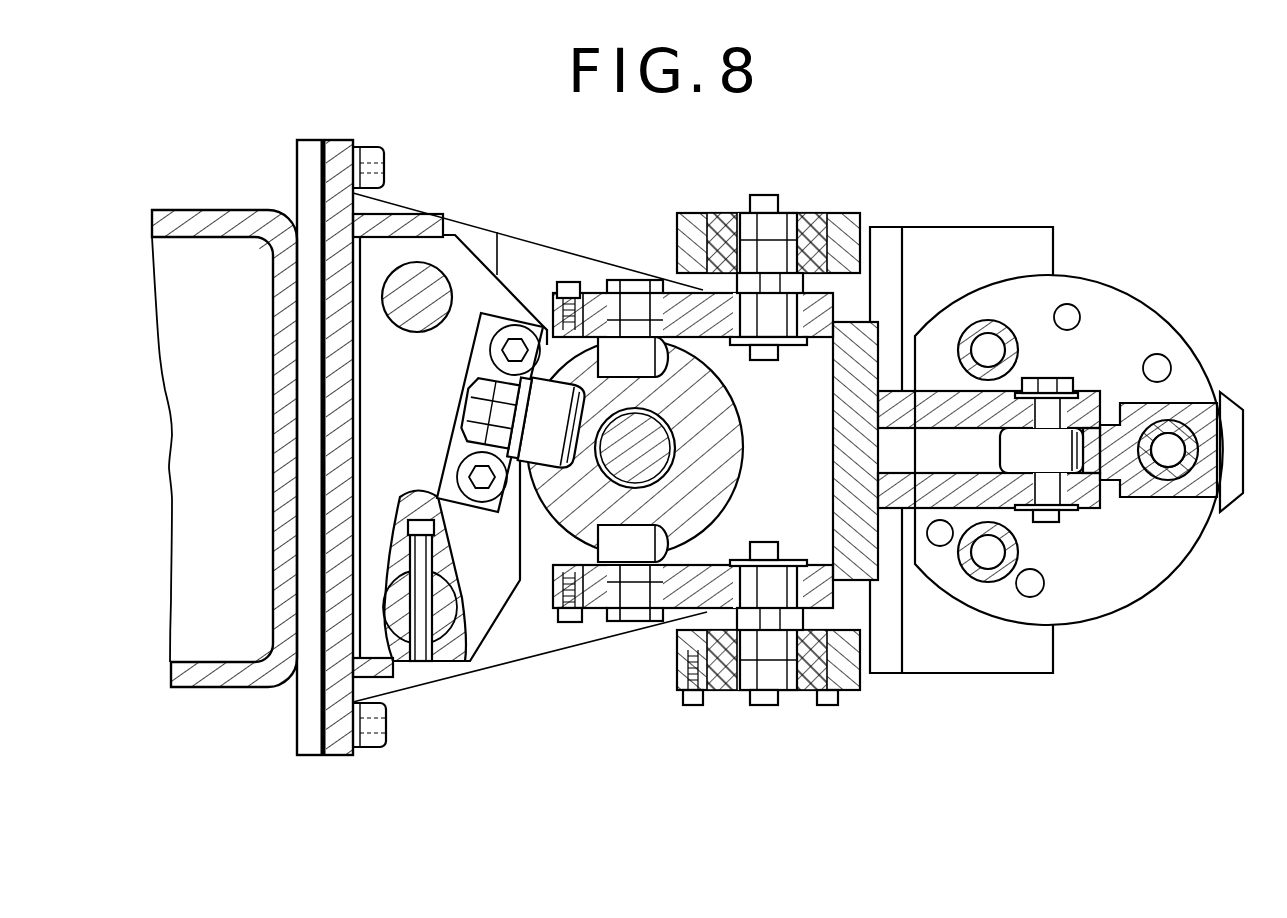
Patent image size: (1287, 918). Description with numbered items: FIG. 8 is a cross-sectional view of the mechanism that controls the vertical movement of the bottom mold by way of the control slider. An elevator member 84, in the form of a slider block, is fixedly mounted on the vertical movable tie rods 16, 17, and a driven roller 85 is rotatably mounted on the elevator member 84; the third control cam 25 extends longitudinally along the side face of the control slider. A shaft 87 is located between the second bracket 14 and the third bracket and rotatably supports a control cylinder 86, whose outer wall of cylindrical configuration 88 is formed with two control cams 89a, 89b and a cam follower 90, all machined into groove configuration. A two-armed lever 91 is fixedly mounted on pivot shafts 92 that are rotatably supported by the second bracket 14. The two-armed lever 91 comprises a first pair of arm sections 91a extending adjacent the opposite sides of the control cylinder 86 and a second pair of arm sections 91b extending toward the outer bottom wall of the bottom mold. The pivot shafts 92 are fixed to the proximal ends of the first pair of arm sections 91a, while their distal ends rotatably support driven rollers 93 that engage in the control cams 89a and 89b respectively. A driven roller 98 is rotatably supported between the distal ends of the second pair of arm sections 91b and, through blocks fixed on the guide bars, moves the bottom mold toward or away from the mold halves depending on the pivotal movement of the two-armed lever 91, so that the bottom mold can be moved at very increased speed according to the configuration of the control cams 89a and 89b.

The second bracket 14 is at (848, 222).
The vertical movable tie rod 16 is at (448, 618).
The vertical movable tie rod 17 is at (422, 270).
The third control cam 25 is at (422, 663).
The elevator member 84 is at (508, 577).
The driven roller 85 is at (548, 462).
The control cylinder 86 is at (717, 437).
The shaft 87 is at (667, 422).
The outer wall of cylindrical configuration 88 is at (743, 470).
The control cam 89a is at (660, 512).
The control cam 89b is at (655, 382).
The cam follower 90 is at (543, 440).
The two-armed lever 91 is at (877, 320).
The first pair of arm sections 91a is at (700, 303).
The second pair of arm sections 91b is at (947, 395).
The pivot shaft 92 is at (777, 237).
The driven roller 93 is at (593, 290).
The driven roller 98 is at (1083, 400).